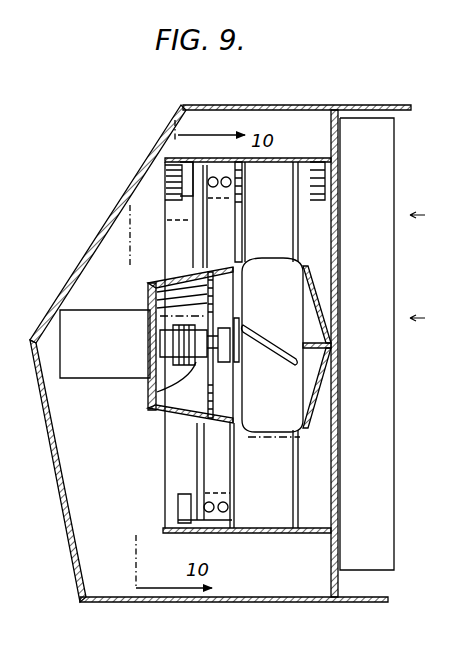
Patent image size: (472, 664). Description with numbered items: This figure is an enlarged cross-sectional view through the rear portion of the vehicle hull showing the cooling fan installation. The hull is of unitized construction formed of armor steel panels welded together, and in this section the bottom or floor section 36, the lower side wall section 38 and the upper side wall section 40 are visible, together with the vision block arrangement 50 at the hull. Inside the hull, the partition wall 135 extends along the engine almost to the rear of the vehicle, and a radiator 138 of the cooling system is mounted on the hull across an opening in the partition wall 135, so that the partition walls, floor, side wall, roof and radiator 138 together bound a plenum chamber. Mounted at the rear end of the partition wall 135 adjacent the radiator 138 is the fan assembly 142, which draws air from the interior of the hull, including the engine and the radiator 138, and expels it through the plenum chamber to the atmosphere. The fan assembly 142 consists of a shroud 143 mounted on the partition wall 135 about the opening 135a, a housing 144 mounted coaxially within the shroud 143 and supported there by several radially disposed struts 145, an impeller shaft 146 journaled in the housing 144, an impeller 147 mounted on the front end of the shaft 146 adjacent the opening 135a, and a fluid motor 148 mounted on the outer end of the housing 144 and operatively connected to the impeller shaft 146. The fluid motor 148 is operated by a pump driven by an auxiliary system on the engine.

The vision block arrangement 50 is at (305, 105).
The upper side wall section 40 is at (113, 218).
The lower side wall section 38 is at (62, 522).
The bottom or floor section 36 is at (251, 602).
The partition wall 135 is at (338, 585).
The opening 135a is at (328, 528).
The shroud 143 is at (252, 535).
The radiator 138 is at (378, 427).
The struts 145 is at (185, 470).
The housing 144 is at (158, 415).
The impeller shaft 146 is at (150, 392).
The fluid motor 148 is at (123, 354).
The impeller 147 is at (287, 467).
The fan assembly 142 is at (318, 300).